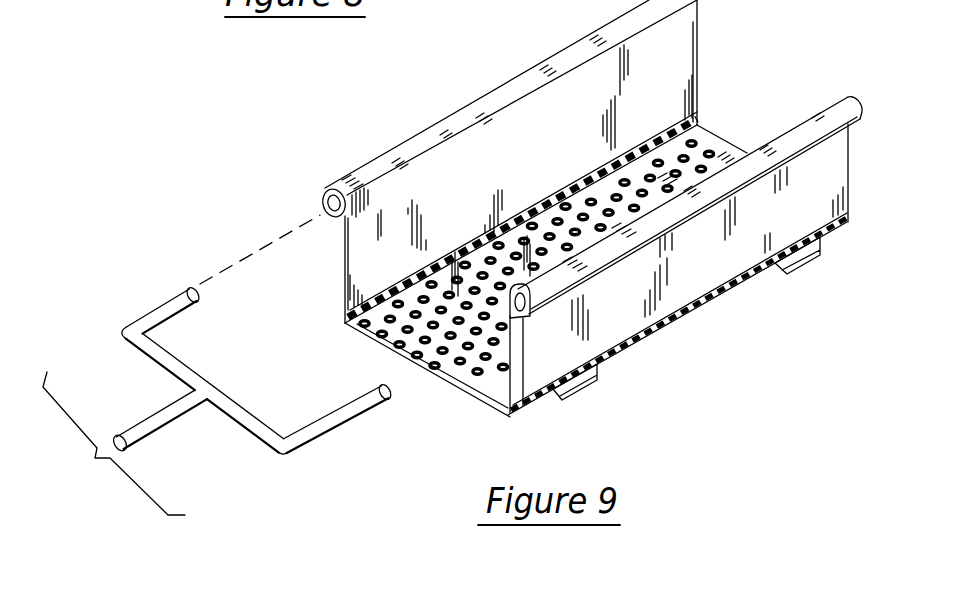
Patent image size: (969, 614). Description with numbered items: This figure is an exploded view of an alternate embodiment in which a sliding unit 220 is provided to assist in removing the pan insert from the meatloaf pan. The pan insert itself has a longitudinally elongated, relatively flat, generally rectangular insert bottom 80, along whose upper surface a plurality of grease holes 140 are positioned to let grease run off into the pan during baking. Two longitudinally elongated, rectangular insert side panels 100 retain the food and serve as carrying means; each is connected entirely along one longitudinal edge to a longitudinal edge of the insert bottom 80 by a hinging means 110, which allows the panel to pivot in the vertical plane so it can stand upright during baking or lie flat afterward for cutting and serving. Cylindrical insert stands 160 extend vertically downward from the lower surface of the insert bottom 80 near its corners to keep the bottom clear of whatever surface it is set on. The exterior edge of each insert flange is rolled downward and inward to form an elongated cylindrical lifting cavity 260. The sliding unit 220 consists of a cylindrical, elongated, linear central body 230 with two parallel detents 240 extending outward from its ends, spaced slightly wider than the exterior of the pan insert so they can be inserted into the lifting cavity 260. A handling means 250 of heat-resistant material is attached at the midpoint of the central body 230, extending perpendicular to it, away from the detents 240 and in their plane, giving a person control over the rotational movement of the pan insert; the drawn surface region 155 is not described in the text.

The insert bottom 80 is at (740, 147).
The insert side panel 100 is at (560, 100).
The hinging means 110 is at (697, 125).
The grease holes 140 is at (398, 333).
The inner wall surface 155 is at (370, 240).
The insert stand 160 is at (587, 388).
The sliding unit 220 is at (218, 368).
The central body 230 is at (197, 363).
The detents 240 is at (163, 300).
The handling means 250 is at (143, 417).
The lifting cavity 260 is at (323, 197).